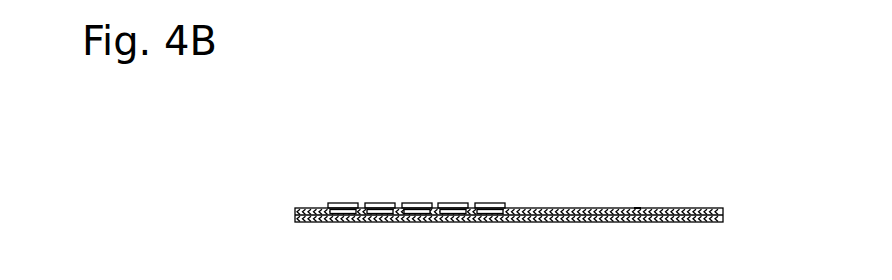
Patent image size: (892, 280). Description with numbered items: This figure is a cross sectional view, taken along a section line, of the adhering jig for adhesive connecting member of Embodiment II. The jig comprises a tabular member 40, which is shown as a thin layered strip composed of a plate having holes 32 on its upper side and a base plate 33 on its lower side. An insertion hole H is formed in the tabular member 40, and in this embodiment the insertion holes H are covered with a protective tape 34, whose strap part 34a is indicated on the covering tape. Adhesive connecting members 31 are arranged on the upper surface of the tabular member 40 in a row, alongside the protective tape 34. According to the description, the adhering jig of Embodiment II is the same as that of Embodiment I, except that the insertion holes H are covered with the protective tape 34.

The adhesive connecting member 31 is at (492, 203).
The plate having holes 32 is at (315, 208).
The base plate 33 is at (316, 222).
The protective tape 34 is at (369, 203).
The strap part of the protective tape 34a is at (405, 203).
The tabular member 40 is at (532, 184).
The insertion hole H is at (637, 206).